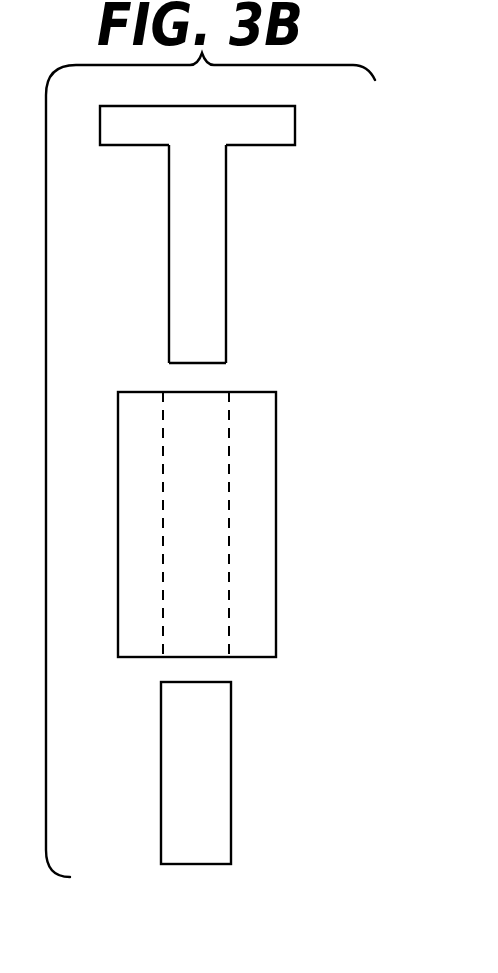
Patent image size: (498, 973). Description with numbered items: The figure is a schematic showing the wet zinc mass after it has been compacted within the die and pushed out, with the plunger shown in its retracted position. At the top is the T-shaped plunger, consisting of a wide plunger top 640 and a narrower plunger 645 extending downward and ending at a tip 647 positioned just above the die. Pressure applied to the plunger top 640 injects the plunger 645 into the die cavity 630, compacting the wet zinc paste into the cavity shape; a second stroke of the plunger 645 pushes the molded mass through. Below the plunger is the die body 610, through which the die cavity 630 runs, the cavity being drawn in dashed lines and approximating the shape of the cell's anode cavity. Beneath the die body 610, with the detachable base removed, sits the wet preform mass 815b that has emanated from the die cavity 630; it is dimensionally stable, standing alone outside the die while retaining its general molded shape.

The plunger top 640 is at (295, 125).
The plunger 645 is at (226, 267).
The tip of stem 647 is at (192, 366).
The die cavity 630 is at (217, 410).
The die body 610 is at (276, 500).
The wet preform mass 815b is at (231, 772).